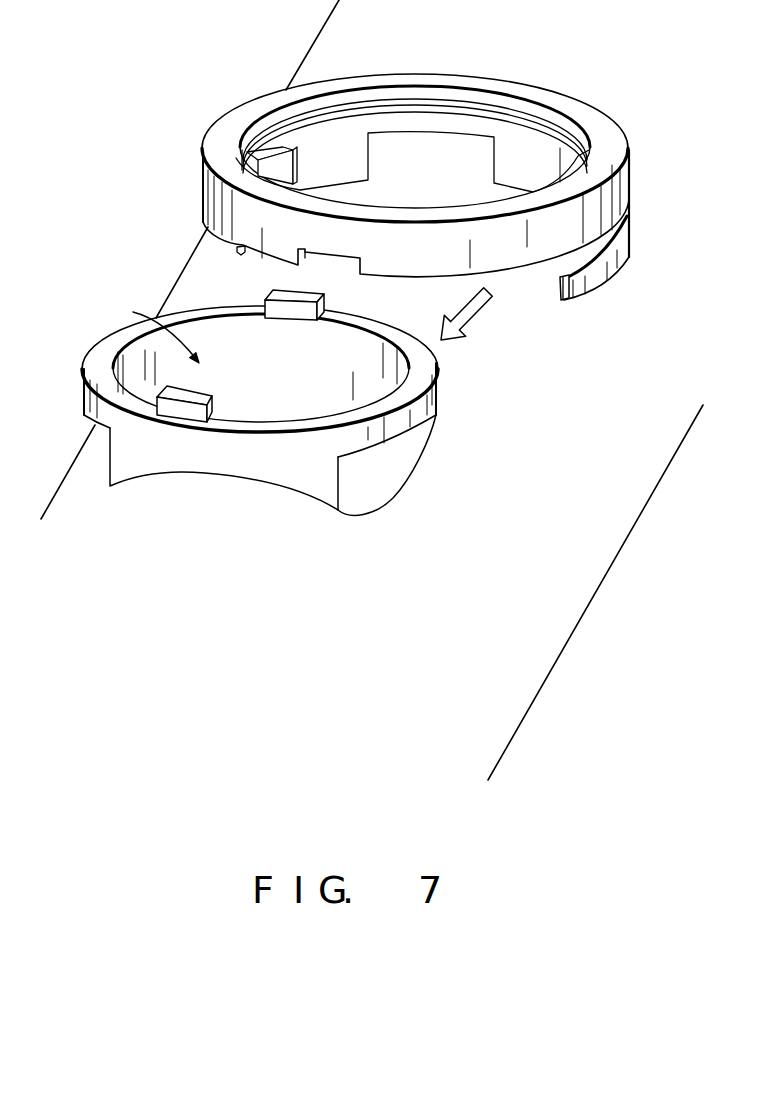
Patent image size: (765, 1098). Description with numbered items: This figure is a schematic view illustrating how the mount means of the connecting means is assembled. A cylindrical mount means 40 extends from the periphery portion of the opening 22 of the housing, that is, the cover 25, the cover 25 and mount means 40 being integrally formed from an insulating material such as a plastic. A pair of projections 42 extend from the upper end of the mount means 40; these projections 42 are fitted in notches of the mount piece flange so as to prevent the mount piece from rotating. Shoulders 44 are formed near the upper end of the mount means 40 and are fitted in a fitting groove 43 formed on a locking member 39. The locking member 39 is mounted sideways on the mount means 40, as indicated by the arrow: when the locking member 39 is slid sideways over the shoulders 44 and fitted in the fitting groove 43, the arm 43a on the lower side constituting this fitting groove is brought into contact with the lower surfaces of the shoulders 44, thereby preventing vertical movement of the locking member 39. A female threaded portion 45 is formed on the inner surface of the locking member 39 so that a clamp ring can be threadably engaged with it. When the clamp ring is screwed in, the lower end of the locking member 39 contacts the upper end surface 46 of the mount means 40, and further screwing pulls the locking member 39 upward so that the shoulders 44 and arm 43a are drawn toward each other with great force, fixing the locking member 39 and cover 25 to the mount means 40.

The opening 22 is at (150, 328).
The cover 25 is at (548, 634).
The locking member 39 is at (607, 190).
The mount means 40 is at (455, 398).
The projections 42 is at (300, 315).
The fitting groove 43 is at (603, 244).
The arm 43a is at (562, 301).
The shoulders 44 is at (397, 443).
The female threaded portion 45 is at (380, 100).
The upper end surface 46 is at (272, 428).